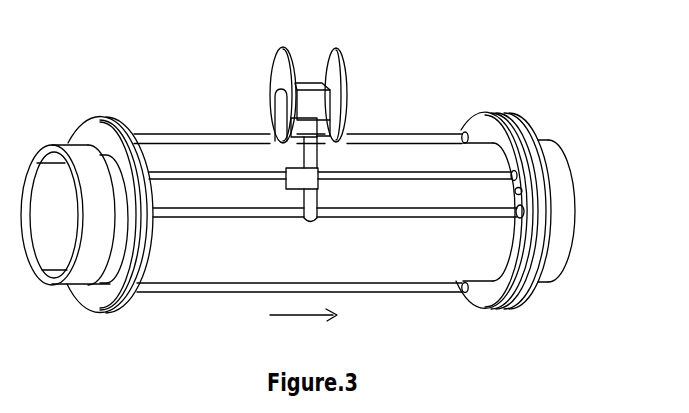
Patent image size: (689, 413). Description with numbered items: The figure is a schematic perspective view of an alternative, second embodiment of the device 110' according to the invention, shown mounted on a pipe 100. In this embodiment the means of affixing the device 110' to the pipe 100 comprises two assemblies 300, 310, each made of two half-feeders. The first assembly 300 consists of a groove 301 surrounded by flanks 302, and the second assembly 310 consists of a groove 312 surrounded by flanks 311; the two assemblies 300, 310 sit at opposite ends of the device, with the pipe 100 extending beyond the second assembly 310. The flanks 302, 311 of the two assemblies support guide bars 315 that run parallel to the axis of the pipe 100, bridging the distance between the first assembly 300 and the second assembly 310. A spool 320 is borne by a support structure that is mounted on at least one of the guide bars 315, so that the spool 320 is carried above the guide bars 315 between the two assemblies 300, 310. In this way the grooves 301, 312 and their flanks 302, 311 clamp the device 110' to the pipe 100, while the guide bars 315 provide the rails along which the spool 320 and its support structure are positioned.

The assembly 300 is at (100, 106).
The groove 301 is at (101, 312).
The flanks 302 is at (122, 306).
The guide bars 315 is at (221, 172).
The spool 320 is at (342, 57).
The device 110' is at (429, 81).
The flanks 311 is at (465, 290).
The assembly 310 is at (498, 107).
The groove 312 is at (521, 298).
The pipe 100 is at (562, 203).